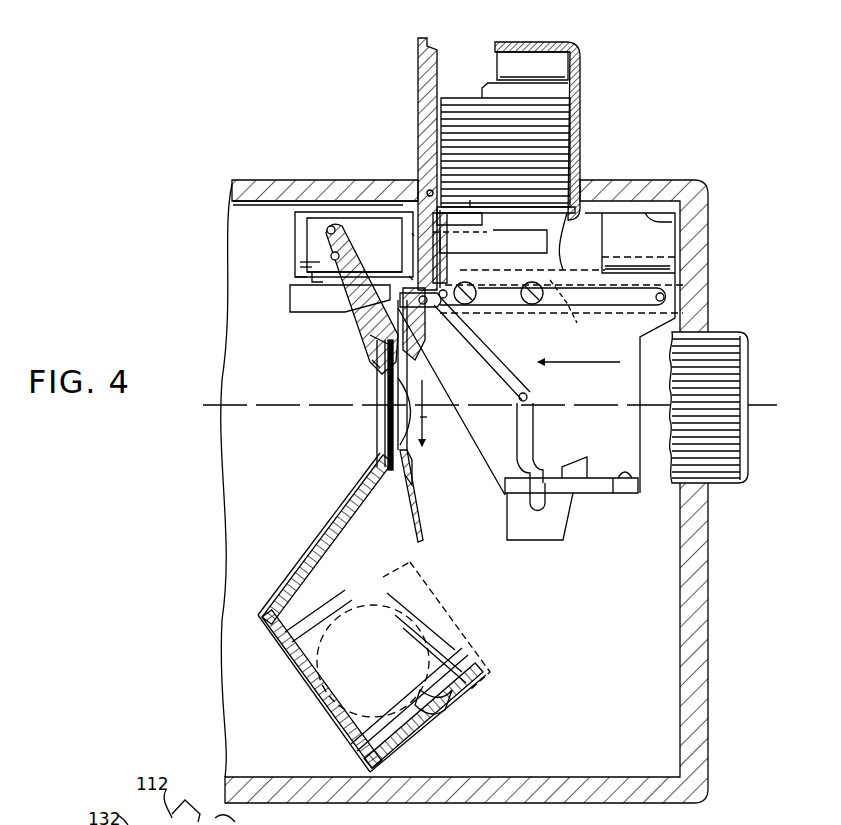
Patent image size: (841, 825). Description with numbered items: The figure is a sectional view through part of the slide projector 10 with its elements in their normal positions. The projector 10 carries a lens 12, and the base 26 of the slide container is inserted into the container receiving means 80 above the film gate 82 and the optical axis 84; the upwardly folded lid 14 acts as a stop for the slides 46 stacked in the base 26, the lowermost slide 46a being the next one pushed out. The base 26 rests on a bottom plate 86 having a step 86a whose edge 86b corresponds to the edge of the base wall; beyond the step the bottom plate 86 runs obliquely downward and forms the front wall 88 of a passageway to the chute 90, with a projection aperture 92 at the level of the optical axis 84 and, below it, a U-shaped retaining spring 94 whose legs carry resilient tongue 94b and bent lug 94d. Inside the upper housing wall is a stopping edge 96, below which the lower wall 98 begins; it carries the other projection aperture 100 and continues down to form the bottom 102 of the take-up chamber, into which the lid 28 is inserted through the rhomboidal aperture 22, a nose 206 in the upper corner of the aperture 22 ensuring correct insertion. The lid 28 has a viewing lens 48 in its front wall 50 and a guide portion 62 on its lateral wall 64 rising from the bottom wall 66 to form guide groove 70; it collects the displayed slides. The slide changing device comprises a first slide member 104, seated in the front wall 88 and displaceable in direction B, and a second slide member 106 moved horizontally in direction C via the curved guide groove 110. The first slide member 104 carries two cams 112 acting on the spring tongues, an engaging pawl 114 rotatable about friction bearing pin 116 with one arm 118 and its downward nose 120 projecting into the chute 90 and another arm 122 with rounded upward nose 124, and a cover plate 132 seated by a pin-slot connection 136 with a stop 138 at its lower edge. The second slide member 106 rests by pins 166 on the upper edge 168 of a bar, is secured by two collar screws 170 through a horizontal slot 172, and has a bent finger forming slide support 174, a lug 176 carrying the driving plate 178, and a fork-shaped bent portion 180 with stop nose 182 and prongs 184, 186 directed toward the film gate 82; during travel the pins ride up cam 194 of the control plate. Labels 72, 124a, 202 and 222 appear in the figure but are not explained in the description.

The projector 10 is at (707, 185).
The lens 12 is at (745, 377).
The folding lid 14 is at (426, 38).
The rhomboidal aperture 22 is at (487, 655).
The base 26 is at (565, 41).
The lid 28 is at (461, 698).
The slides 46 is at (551, 131).
The lowermost slide 46a is at (559, 205).
The viewing lens 48 is at (442, 714).
The front wall 50 is at (475, 678).
The guide portion 62 is at (317, 615).
The lateral wall 64 is at (396, 615).
The bottom wall 66 is at (373, 728).
The guide groove 70 is at (330, 593).
The edge 72 is at (412, 580).
The container receiving means 80 is at (638, 168).
The film gate 82 is at (345, 454).
The optical axis 84 is at (212, 405).
The bottom plate 86 is at (560, 228).
The step 86a is at (452, 200).
The edge 86b is at (472, 200).
The front wall 88 is at (377, 375).
The chute 90 is at (378, 352).
The projection aperture 92 is at (408, 428).
The U-shaped retaining spring 94 is at (421, 526).
The resilient tongue 94b is at (392, 410).
The bent lug 94d is at (408, 455).
The stopping edge 96 is at (348, 193).
The lower wall 98 is at (372, 362).
The projection aperture 100 is at (385, 432).
The bottom 102 is at (308, 676).
The first slide member 104 is at (387, 197).
The second slide member 106 is at (596, 440).
The guide groove 110 is at (530, 396).
The cams 112 is at (397, 200).
The engaging pawl 114 is at (322, 282).
The friction bearing pin 116 is at (428, 343).
The arm 118 is at (296, 303).
The nose 120 is at (383, 328).
The arm 122 is at (441, 312).
The nose 124 is at (448, 306).
The plate 124a is at (417, 624).
The cover plate 132 is at (325, 278).
The pin-slot connection 136 is at (412, 233).
The stop 138 is at (409, 276).
The pins 166 is at (580, 312).
The upper edge 168 is at (292, 275).
The collar screws 170 is at (534, 308).
The horizontal slot 172 is at (662, 298).
The slide support 174 is at (415, 190).
The lug 176 is at (676, 265).
The driving plate 178 is at (660, 222).
The bent portion 180 is at (628, 478).
The stop nose 182 is at (585, 465).
The prong 184 is at (550, 487).
The prong 186 is at (515, 483).
The cam 194 is at (312, 272).
The tab 202 is at (300, 267).
The nose 206 is at (383, 577).
The terminal block 222 is at (457, 280).
The arrow B is at (430, 413).
The arrow C is at (590, 362).